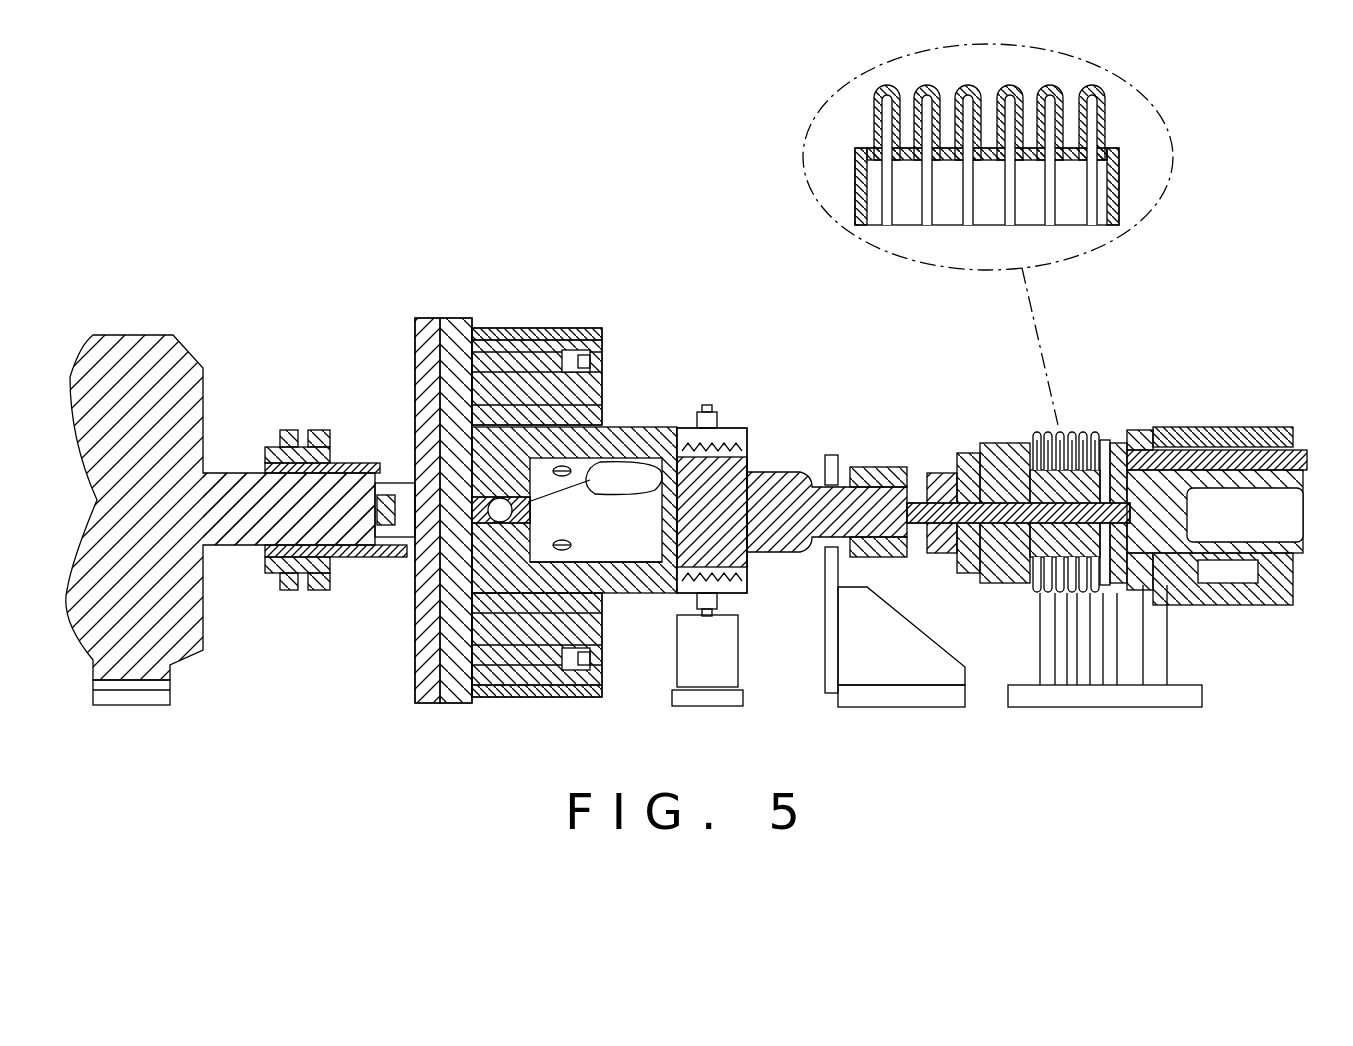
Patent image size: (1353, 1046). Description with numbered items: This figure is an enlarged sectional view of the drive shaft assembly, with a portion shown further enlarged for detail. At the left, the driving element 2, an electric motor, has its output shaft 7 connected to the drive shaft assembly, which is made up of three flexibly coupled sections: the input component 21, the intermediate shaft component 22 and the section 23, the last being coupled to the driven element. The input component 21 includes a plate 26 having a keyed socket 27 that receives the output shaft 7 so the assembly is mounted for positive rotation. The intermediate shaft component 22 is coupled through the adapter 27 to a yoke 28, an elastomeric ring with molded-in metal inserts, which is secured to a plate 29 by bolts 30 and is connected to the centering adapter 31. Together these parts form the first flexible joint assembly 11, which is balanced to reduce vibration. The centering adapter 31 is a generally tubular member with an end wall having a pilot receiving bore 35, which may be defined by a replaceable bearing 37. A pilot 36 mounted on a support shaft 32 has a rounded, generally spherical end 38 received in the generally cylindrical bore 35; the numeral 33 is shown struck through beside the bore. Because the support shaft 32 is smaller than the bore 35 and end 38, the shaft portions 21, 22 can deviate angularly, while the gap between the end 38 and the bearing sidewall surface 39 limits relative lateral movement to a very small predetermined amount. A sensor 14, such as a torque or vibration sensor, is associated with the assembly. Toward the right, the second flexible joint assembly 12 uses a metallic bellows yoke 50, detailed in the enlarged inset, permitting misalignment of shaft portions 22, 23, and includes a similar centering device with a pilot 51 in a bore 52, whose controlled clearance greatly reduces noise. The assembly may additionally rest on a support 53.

The driving element 2 is at (185, 345).
The output shaft 7 is at (240, 470).
The flexible joint assembly 11 is at (565, 314).
The flexible joint assembly 12 is at (1072, 425).
The sensor 14 is at (720, 410).
The input component 21 is at (425, 314).
The intermediate shaft component 22 is at (778, 470).
The section 23 is at (1143, 428).
The plate 26 is at (408, 342).
The keyed socket 27 is at (353, 480).
The yoke 28 is at (593, 328).
The plate 29 is at (455, 316).
The bolts 30 is at (528, 328).
The centering adapter 31 is at (642, 426).
The support shaft 32 is at (407, 473).
The chamber 33 is at (590, 479).
The pilot receiving bore 35 is at (624, 491).
The pilot 36 is at (407, 560).
The replaceable bearing 37 is at (573, 553).
The rounded end 38 is at (527, 500).
The sidewall surface 39 is at (530, 517).
The bellows yoke 50 is at (1058, 480).
The pilot 51 is at (1063, 580).
The bore 52 is at (1038, 590).
The support 53 is at (823, 640).